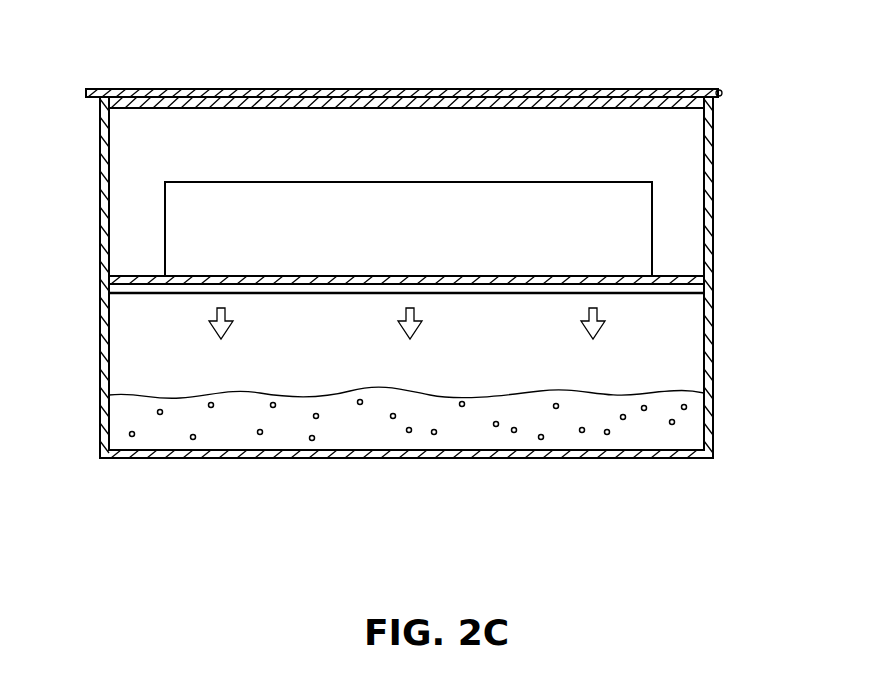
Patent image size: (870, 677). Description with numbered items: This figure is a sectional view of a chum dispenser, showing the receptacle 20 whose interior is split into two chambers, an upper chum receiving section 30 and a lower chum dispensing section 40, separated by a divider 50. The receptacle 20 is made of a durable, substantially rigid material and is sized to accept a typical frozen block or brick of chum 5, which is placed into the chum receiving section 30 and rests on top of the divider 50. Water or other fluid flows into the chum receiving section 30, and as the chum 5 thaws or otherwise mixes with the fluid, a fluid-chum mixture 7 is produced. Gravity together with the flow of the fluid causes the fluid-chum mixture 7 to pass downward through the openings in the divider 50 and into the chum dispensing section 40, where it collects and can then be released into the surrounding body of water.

The chum 5 is at (394, 183).
The fluid-chum mixture 7 is at (690, 417).
The receptacle 20 is at (100, 181).
The chum receiving section 30 is at (680, 147).
The chum dispensing section 40 is at (680, 330).
The divider 50 is at (672, 276).